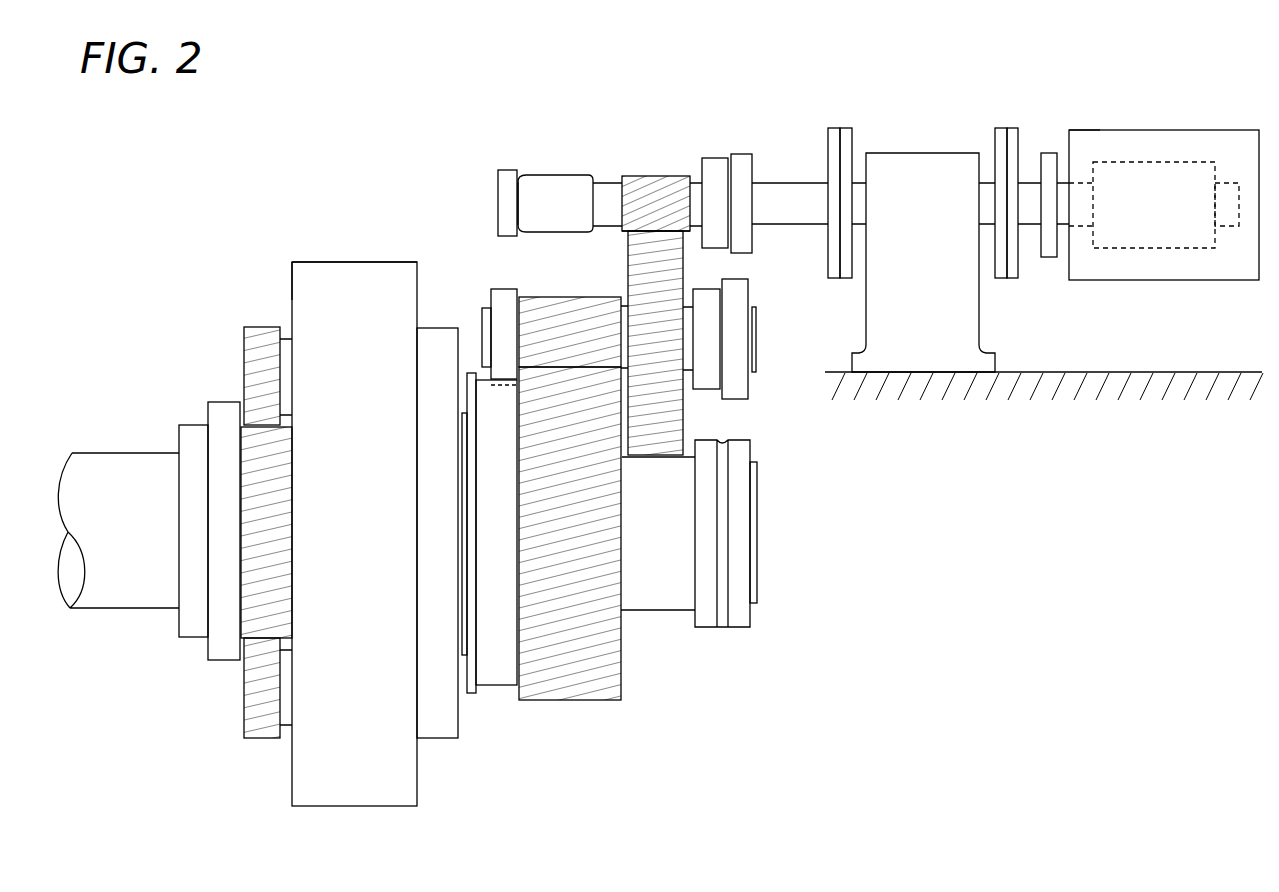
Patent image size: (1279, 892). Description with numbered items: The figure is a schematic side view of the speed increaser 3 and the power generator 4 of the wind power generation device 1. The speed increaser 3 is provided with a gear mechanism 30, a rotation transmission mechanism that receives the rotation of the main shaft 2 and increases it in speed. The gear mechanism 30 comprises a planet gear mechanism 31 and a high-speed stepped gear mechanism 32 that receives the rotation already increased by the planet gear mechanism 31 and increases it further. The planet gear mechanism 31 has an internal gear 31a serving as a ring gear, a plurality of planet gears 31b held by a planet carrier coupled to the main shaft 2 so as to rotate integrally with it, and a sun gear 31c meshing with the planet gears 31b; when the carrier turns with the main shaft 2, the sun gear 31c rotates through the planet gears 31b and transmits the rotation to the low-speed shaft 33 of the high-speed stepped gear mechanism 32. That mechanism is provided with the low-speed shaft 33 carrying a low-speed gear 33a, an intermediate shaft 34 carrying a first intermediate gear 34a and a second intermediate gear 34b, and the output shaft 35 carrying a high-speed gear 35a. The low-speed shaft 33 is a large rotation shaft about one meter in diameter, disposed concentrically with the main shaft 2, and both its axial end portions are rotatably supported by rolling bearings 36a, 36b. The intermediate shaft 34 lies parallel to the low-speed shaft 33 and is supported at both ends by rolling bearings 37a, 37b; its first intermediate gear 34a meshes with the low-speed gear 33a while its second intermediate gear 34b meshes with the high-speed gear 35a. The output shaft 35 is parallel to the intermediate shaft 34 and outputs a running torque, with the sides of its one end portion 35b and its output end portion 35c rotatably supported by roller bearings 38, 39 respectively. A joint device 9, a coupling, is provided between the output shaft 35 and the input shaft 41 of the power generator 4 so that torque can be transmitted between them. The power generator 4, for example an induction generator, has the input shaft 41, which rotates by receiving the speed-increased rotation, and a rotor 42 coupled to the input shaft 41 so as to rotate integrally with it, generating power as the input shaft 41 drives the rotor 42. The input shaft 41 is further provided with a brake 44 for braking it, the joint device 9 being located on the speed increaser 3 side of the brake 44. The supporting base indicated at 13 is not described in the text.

The wind power generation device 1 is at (1038, 86).
The main shaft 2 is at (97, 465).
The speed increaser 3 is at (354, 201).
The power generator 4 is at (1142, 295).
The joint device 9 is at (957, 133).
The base 13 is at (840, 372).
The gear mechanism 30 is at (286, 251).
The planet gear mechanism 31 is at (389, 256).
The internal gear 31a is at (320, 270).
The planet gears 31b is at (248, 347).
The sun gear 31c is at (242, 473).
The high-speed stepped gear mechanism 32 is at (649, 129).
The low-speed shaft 33 is at (664, 624).
The low-speed gear 33a is at (570, 690).
The intermediate shaft 34 is at (477, 306).
The first intermediate gear 34a is at (568, 296).
The second intermediate gear 34b is at (683, 263).
The output shaft 35 is at (571, 160).
The high-speed gear 35a is at (660, 175).
The one end portion 35b is at (540, 180).
The other end portion 35c is at (790, 180).
The rolling bearing 36a is at (497, 676).
The rolling bearing 36b is at (703, 627).
The rolling bearing 37a is at (505, 290).
The rolling bearing 37b is at (740, 288).
The roller bearing 38 is at (497, 175).
The roller bearing 39 is at (742, 154).
The input shaft 41 is at (1023, 225).
The rotor 42 is at (1185, 250).
The brake 44 is at (1048, 152).